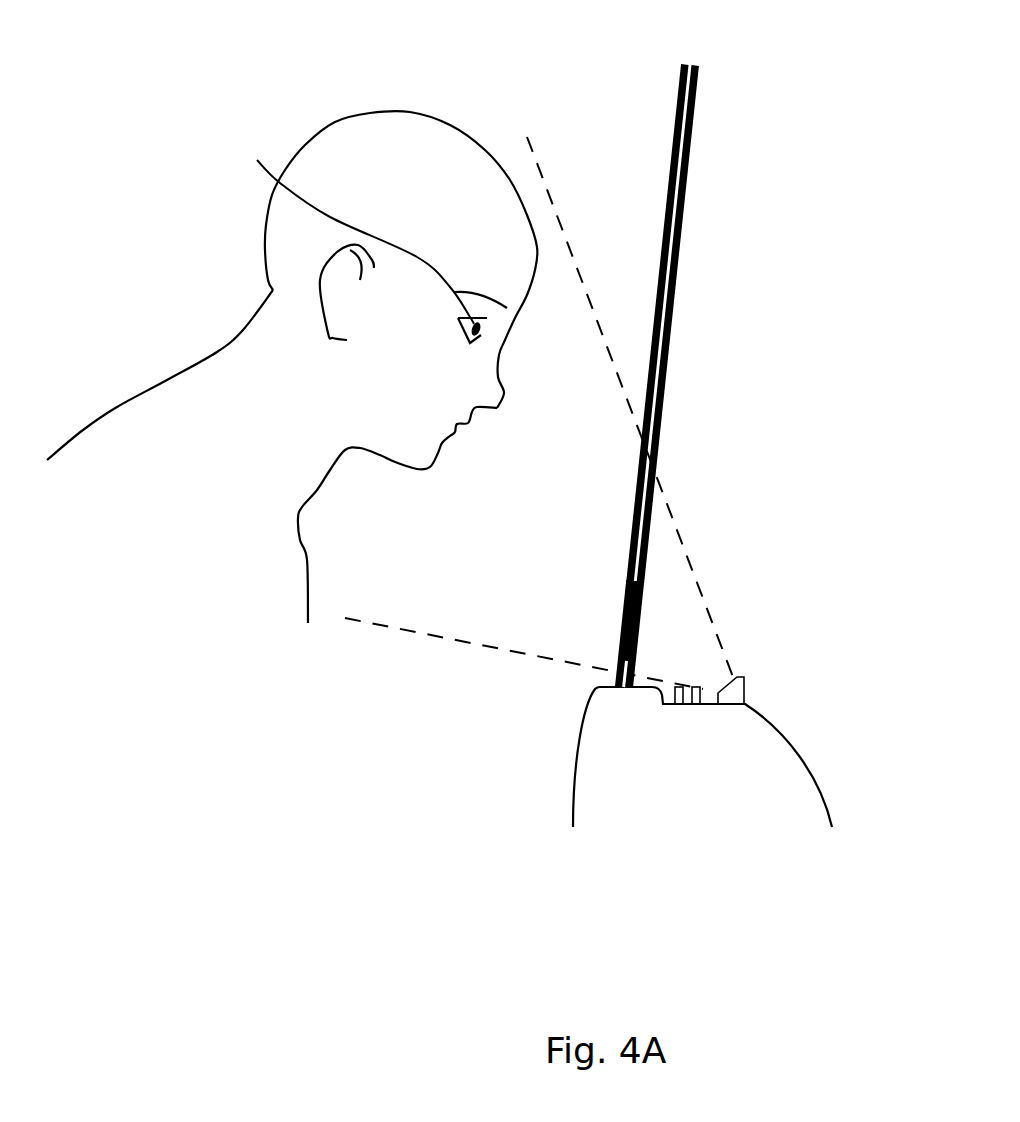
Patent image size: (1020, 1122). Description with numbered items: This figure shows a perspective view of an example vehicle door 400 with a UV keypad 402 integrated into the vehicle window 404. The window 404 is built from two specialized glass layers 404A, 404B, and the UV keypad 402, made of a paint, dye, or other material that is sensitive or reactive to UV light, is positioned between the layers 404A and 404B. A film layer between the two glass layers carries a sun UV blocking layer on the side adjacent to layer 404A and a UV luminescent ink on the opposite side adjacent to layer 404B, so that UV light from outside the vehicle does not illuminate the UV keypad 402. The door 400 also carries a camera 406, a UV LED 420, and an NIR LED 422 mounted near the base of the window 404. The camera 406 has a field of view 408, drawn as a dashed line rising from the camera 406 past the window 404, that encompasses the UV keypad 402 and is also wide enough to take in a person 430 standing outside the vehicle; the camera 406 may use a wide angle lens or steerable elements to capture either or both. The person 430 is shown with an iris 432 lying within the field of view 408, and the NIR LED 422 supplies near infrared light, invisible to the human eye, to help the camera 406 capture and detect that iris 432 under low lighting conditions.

The vehicle door 400 is at (667, 771).
The UV keypad 402 is at (642, 598).
The vehicle window 404 is at (690, 348).
The layer 404A is at (678, 100).
The layer 404B is at (696, 123).
The camera 406 is at (746, 703).
The field of view 408 is at (563, 224).
The UV LED 420 is at (697, 707).
The NIR LED 422 is at (667, 707).
The person 430 is at (331, 123).
The iris 432 is at (347, 229).